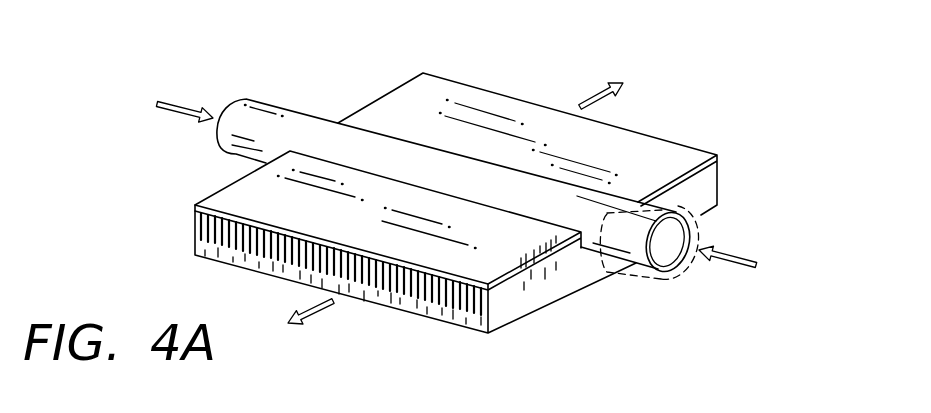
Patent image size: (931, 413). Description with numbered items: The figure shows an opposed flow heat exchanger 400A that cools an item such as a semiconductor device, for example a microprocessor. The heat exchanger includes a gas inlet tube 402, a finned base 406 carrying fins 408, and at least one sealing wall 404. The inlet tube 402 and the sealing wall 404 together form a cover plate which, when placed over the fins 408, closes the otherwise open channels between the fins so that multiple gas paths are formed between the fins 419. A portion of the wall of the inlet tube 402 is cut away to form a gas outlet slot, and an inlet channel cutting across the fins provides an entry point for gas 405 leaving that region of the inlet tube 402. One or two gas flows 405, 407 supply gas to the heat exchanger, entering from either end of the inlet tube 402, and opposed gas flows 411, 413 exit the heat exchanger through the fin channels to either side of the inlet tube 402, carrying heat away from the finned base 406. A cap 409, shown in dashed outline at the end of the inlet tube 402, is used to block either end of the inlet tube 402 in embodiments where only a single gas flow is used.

The opposed flow heat exchanger 400A is at (680, 103).
The gas inlet tube 402 is at (286, 128).
The sealing wall 404 is at (240, 190).
The gas flow 405 is at (172, 102).
The finned base 406 is at (413, 307).
The gas flow 407 is at (733, 266).
The fins 408 is at (350, 280).
The cap 409 is at (640, 268).
The opposed gas flow exiting the heat exchanger 411 is at (610, 85).
The opposed gas flow exiting the heat exchanger 413 is at (291, 324).
The fins 419 is at (205, 232).